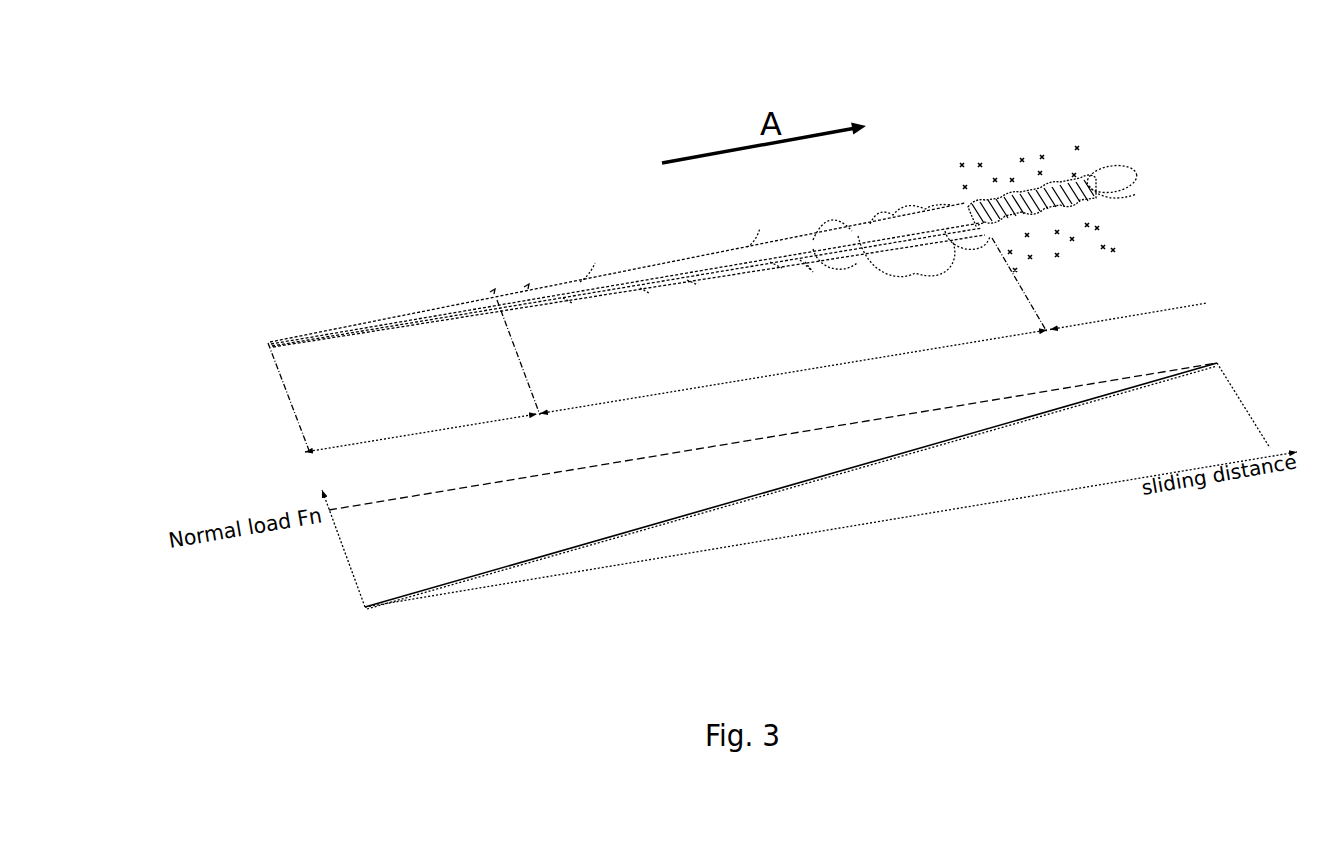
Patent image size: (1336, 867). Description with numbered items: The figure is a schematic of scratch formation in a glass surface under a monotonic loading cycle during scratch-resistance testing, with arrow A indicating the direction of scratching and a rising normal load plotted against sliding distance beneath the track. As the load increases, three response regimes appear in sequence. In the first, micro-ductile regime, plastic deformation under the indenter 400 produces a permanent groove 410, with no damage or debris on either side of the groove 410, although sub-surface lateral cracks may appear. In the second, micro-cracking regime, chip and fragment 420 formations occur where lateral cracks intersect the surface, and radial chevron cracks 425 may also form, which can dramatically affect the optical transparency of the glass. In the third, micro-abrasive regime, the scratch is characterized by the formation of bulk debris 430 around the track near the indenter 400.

The indenter 400 is at (1115, 178).
The permanent groove 410 is at (400, 316).
The chip and fragment formations 420 is at (923, 255).
The radial (chevron) cracks 425 is at (682, 253).
The bulk debris 430 is at (1093, 228).